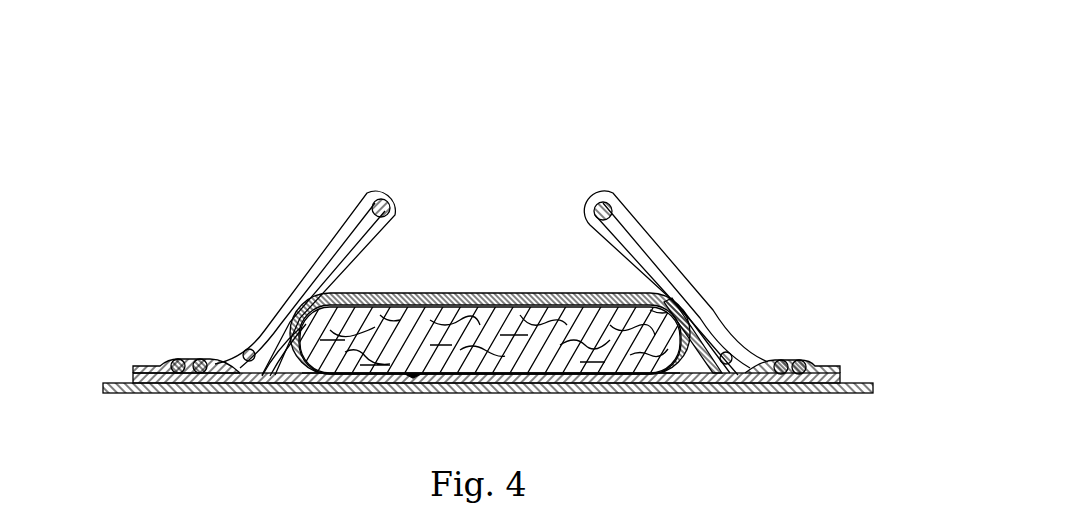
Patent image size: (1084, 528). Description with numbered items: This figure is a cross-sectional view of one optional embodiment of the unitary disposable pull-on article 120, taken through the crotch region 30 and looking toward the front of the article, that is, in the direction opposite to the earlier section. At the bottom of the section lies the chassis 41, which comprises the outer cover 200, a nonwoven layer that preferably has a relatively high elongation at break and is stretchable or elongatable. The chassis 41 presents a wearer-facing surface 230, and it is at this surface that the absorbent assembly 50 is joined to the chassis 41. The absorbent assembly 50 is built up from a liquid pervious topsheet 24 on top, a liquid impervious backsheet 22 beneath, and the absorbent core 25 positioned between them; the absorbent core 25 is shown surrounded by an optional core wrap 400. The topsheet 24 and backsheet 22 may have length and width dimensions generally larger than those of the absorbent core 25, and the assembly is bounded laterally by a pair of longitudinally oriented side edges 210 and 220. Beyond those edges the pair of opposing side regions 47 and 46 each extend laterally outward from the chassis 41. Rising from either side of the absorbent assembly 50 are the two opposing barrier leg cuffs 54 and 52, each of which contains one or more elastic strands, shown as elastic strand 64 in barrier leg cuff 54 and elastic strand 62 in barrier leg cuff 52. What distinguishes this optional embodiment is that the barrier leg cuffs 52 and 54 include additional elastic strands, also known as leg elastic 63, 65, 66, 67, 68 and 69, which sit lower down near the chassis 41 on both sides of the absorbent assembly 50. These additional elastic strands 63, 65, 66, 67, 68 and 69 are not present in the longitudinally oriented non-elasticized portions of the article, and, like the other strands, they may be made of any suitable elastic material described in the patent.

The unitary disposable pull-on article 120 is at (594, 143).
The crotch region 30 is at (471, 194).
The absorbent assembly 50 is at (517, 214).
The topsheet 24 is at (512, 293).
The absorbent core 25 is at (593, 296).
The core wrap 400 is at (400, 294).
The backsheet 22 is at (493, 394).
The chassis 41 is at (553, 394).
The outer cover 200 is at (313, 394).
The wearer-facing surface 230 is at (388, 394).
The longitudinally oriented side edge 210 is at (220, 396).
The longitudinally oriented side edge 220 is at (758, 397).
The side region 47 is at (166, 400).
The side region 46 is at (805, 400).
The barrier leg cuff 54 is at (346, 212).
The elastic strand 64 is at (385, 196).
The leg elastic 63 is at (247, 348).
The barrier leg cuff 52 is at (640, 225).
The elastic strand 62 is at (607, 205).
The leg elastic 65 is at (733, 354).
The leg elastic 68 is at (202, 359).
The leg elastic 69 is at (177, 359).
The leg elastic 66 is at (788, 360).
The leg elastic 67 is at (806, 361).